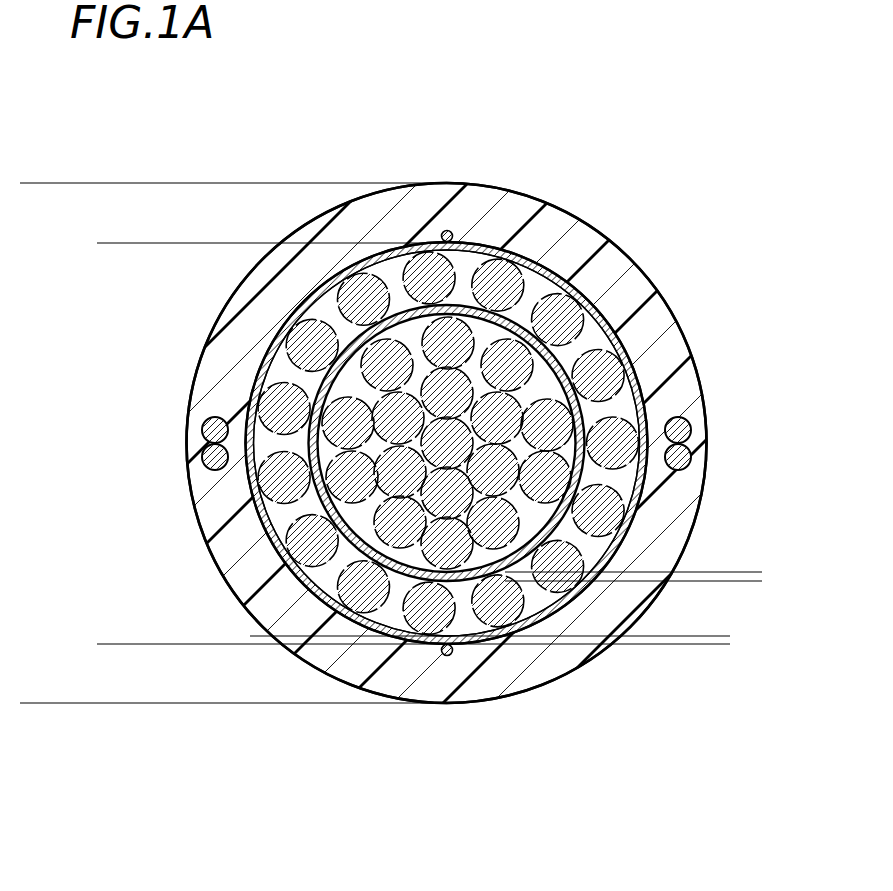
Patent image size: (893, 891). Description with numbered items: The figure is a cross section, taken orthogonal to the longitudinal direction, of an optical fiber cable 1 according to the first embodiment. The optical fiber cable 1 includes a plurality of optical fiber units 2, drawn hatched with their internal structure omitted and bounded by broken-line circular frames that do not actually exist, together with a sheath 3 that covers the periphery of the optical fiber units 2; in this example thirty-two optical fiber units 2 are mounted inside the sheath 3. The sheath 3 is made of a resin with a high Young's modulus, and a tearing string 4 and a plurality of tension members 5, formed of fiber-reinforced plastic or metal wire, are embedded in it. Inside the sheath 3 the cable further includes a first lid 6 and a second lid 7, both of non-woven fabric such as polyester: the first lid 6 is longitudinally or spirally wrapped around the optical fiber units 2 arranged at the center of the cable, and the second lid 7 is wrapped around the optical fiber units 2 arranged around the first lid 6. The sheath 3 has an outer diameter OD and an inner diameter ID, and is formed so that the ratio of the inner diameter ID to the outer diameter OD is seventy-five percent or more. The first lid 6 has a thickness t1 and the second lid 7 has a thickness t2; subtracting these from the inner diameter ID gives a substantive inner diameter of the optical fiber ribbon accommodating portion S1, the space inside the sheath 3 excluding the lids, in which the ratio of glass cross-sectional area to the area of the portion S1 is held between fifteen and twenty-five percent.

The optical fiber cable 1 is at (603, 168).
The optical fiber unit 2 is at (489, 268).
The sheath 3 is at (673, 358).
The tearing string 4 is at (447, 231).
The tension member 5 is at (690, 427).
The first lid 6 is at (600, 330).
The second lid 7 is at (630, 348).
The optical fiber ribbon accommodating portion S1 is at (623, 403).
The outer diameter OD is at (42, 183).
The inner diameter ID is at (107, 243).
The thickness of the first lid t1 is at (756, 537).
The thickness of the second lid t2 is at (722, 602).